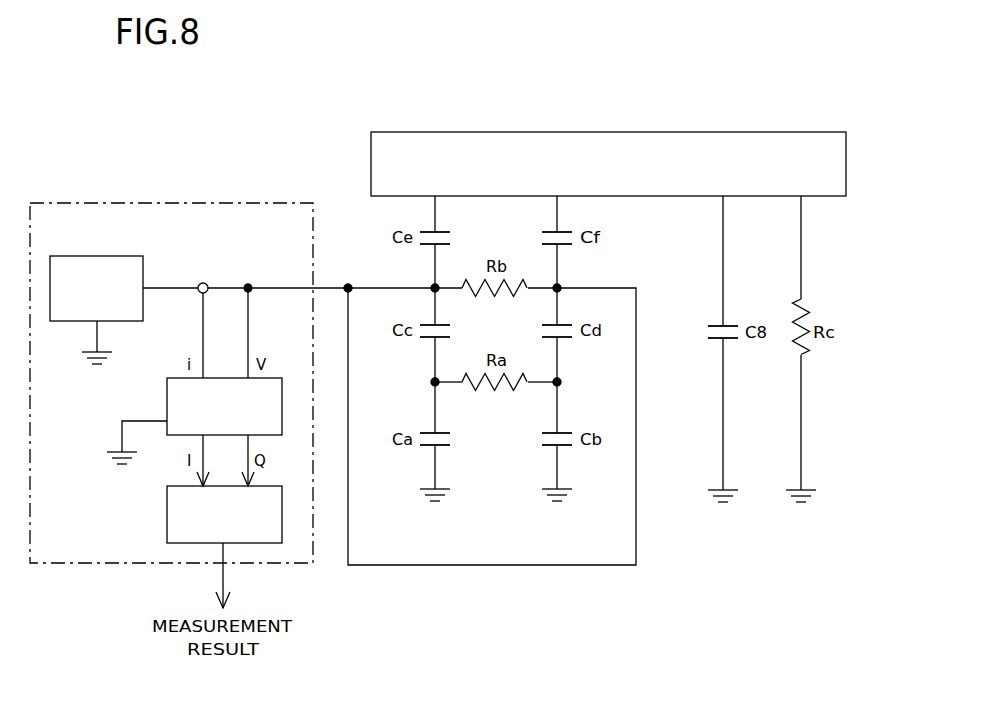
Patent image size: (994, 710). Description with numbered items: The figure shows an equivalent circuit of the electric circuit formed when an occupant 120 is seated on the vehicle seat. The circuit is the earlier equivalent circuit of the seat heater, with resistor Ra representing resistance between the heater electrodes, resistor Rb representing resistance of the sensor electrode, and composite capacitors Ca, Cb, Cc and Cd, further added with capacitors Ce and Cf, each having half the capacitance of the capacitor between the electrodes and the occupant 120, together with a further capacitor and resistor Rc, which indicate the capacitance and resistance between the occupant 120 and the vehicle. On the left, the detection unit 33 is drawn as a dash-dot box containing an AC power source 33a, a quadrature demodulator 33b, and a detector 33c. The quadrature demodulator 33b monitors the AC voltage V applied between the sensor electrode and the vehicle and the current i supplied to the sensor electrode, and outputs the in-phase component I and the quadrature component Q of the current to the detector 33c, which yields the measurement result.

The detection unit 33 is at (256, 206).
The AC power source 33a is at (122, 256).
The quadrature demodulator 33b is at (167, 394).
The detector 33c is at (167, 502).
The occupant 120 is at (799, 131).